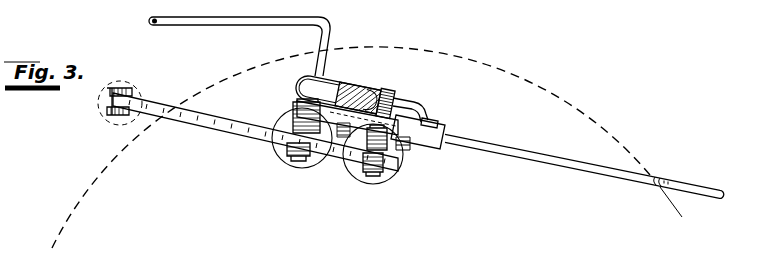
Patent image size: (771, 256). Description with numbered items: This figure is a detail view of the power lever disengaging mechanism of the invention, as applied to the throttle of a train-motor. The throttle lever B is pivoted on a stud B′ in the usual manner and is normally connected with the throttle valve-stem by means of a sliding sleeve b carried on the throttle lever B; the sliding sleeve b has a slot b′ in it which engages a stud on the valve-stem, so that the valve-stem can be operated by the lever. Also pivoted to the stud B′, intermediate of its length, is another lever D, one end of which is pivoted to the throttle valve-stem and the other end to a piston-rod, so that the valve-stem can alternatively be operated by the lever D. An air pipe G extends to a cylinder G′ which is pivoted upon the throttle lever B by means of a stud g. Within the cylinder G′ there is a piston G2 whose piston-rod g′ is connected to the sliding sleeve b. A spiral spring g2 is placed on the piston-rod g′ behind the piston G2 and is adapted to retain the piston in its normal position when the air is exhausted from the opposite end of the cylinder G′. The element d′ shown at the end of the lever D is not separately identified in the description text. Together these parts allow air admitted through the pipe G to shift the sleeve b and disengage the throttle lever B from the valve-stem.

The air pipe G is at (239, 46).
The lever D is at (227, 135).
The end clip of rule d' is at (111, 126).
The stud g is at (307, 149).
The wheel a is at (354, 166).
The stud B' is at (330, 108).
The cylinder G' is at (337, 84).
The piston G2 is at (353, 88).
The spiral spring g2 is at (376, 90).
The piston-rod g' is at (424, 110).
The sliding sleeve b is at (425, 150).
The slot b' is at (411, 163).
The throttle lever B is at (584, 175).